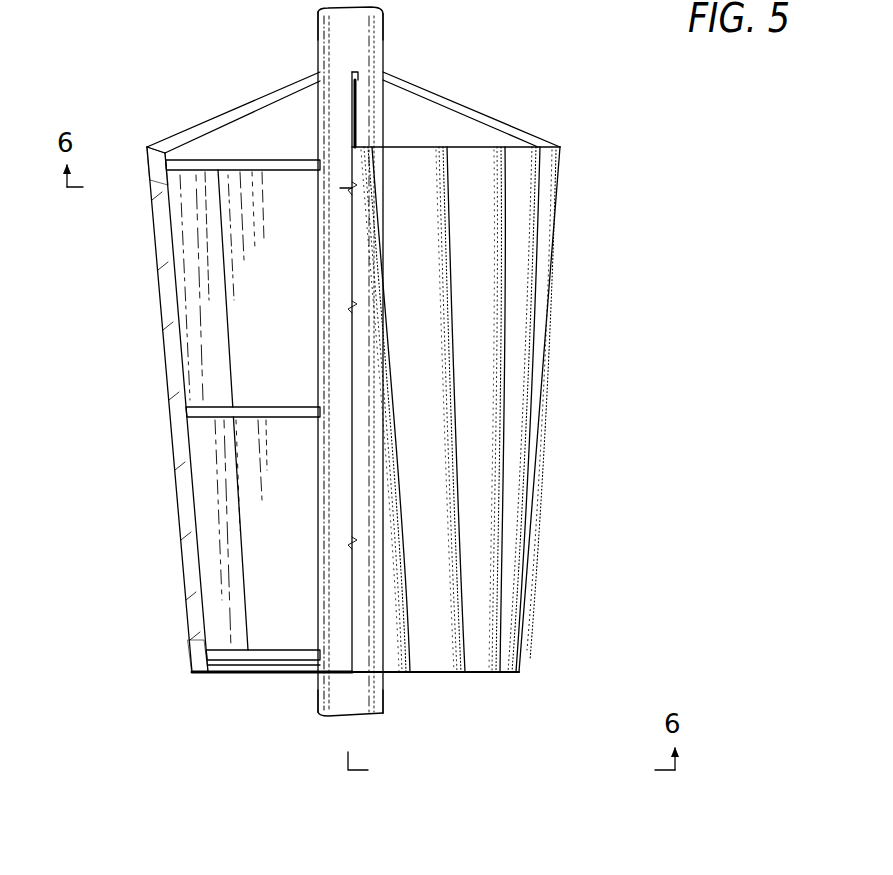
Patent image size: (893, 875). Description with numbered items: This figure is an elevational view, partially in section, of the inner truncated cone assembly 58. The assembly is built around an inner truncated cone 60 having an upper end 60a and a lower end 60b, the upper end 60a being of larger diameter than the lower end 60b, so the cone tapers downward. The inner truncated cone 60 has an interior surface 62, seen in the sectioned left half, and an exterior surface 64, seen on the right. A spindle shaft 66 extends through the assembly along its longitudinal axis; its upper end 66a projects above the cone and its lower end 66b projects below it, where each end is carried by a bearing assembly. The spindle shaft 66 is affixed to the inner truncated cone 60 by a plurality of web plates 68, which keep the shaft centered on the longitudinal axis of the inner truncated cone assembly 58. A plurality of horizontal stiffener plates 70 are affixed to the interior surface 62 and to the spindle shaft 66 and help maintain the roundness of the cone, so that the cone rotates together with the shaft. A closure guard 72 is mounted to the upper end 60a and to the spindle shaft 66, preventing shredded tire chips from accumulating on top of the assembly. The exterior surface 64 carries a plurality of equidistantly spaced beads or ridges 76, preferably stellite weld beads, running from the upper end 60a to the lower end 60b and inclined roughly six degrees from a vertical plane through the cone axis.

The inner truncated cone assembly 58 is at (161, 329).
The inner truncated cone 60 is at (176, 463).
The upper end 60a is at (152, 203).
The lower end 60b is at (190, 643).
The interior surface 62 is at (215, 528).
The exterior surface 64 is at (434, 472).
The spindle shaft 66 is at (360, 690).
The upper end of the spindle shaft 66a is at (385, 22).
The lower end of the spindle shaft 66b is at (316, 698).
The web plates 68 is at (291, 298).
The horizontal stiffener plates 70 is at (290, 172).
The closure guard 72 is at (270, 92).
The beads or ridges 76 is at (508, 275).